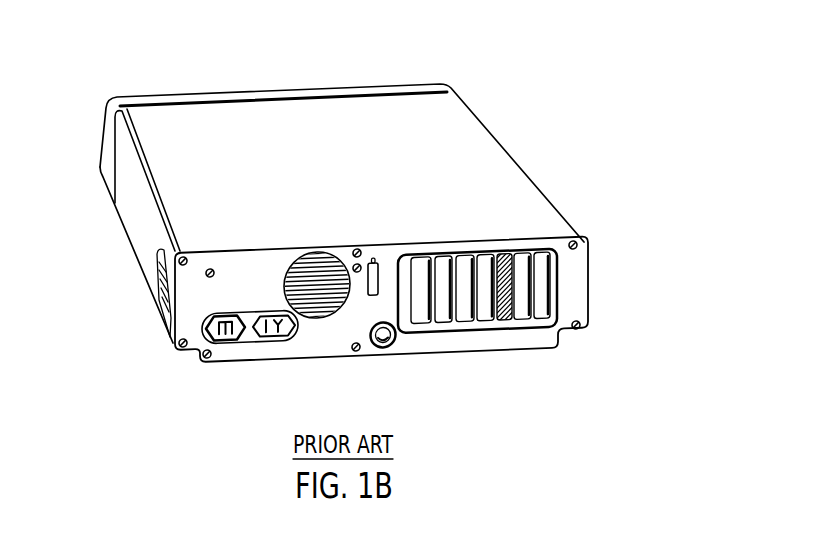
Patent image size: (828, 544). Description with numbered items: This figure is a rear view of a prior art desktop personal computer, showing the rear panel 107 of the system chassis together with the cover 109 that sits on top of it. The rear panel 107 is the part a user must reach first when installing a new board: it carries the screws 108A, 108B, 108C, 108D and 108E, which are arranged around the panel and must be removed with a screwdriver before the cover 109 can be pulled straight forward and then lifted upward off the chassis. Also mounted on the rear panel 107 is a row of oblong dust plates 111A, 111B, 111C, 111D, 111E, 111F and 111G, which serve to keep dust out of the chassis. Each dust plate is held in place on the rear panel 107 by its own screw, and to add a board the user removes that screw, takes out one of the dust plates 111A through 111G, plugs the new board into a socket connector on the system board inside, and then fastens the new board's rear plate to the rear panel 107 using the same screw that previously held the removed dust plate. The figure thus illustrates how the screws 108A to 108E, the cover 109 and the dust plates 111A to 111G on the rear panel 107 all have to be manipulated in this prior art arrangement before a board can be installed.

The rear panel 107 is at (261, 294).
The cover 109 is at (411, 146).
The screw 108A is at (184, 256).
The screw 108B is at (181, 352).
The screw 108C is at (585, 333).
The screw 108D is at (585, 243).
The screw 108E is at (356, 250).
The dust plate 111A is at (402, 305).
The dust plate 111B is at (425, 257).
The dust plate 111C is at (444, 257).
The dust plate 111D is at (467, 257).
The dust plate 111E is at (484, 318).
The dust plate 111F is at (523, 318).
The dust plate 111G is at (543, 295).